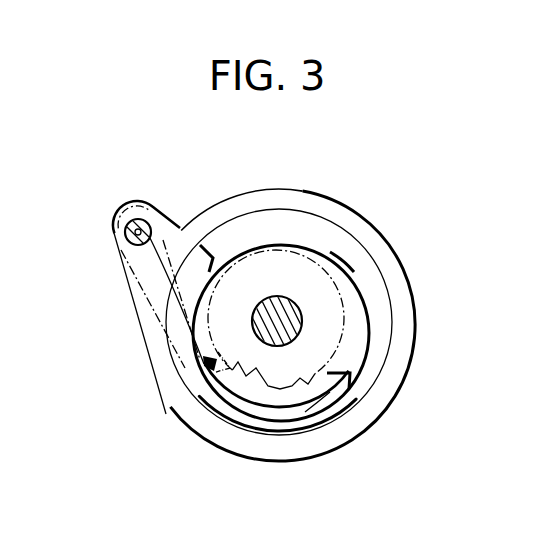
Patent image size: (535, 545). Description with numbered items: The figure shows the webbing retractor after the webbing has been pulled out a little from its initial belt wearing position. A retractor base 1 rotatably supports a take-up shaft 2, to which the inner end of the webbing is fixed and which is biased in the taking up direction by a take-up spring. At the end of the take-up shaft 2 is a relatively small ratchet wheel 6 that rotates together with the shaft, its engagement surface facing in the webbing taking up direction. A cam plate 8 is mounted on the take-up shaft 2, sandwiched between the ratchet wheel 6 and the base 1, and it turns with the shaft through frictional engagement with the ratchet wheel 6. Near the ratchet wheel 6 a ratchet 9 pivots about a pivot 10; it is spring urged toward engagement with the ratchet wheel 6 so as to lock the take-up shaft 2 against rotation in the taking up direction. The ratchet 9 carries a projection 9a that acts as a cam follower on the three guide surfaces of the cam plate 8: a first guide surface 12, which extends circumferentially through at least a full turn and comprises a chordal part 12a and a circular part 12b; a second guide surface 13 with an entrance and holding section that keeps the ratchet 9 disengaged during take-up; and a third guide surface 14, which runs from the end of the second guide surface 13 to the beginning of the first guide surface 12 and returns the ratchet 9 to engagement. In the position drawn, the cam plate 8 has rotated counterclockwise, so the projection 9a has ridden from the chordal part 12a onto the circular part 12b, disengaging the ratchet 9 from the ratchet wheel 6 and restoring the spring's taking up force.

The retractor base 1 is at (288, 192).
The take-up shaft 2 is at (282, 311).
The ratchet wheel 6 is at (333, 416).
The cam plate 8 is at (327, 238).
The ratchet 9 is at (143, 298).
The projection 9a is at (206, 363).
The pivot 10 is at (136, 233).
The first guide surface 12 is at (247, 252).
The chordal part 12a is at (278, 394).
The circular part 12b is at (347, 267).
The second guide surface 13 is at (222, 410).
The third guide surface 14 is at (312, 374).